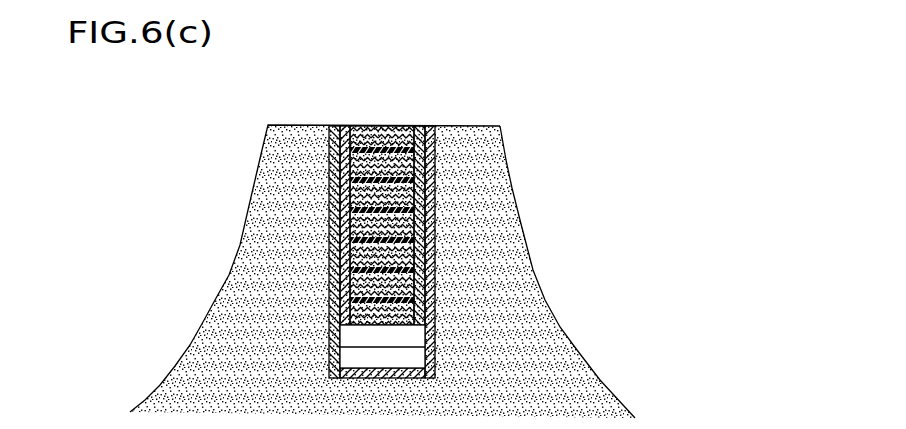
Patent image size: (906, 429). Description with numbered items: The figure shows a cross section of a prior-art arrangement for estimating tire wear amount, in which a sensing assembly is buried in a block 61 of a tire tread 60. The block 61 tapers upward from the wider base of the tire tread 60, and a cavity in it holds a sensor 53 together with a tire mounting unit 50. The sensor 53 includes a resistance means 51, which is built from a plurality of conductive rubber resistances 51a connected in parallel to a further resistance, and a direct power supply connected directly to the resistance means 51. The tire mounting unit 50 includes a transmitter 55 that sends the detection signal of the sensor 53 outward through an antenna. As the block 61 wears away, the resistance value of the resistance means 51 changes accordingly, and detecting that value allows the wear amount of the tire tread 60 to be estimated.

The tire tread 60 is at (512, 188).
The block 61 is at (527, 247).
The tire mounting unit 50 is at (330, 242).
The resistance means 51 is at (380, 126).
The conductive rubber resistance 51a is at (330, 133).
The sensor 53 is at (332, 318).
The transmitter 55 is at (402, 355).